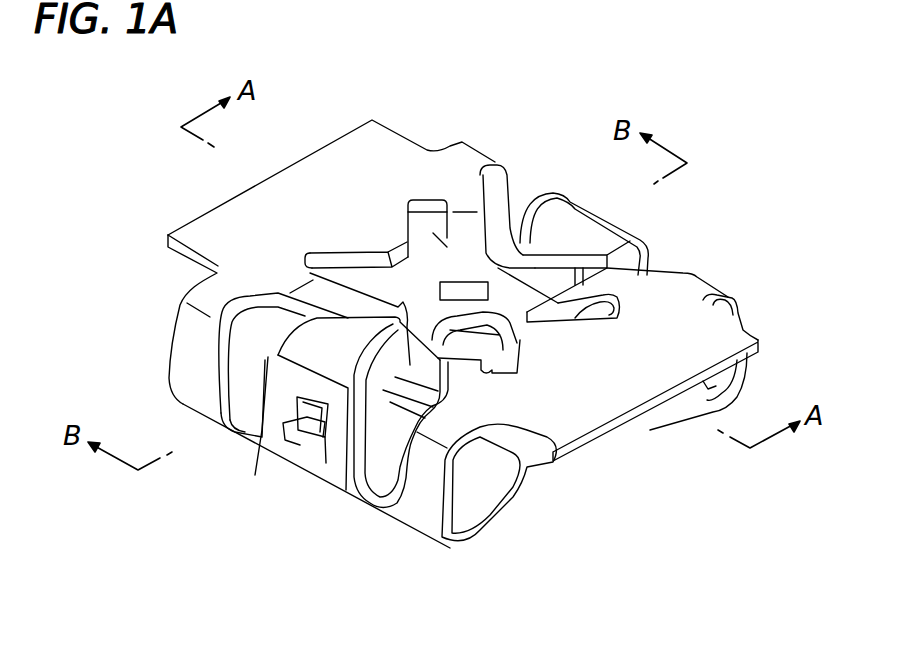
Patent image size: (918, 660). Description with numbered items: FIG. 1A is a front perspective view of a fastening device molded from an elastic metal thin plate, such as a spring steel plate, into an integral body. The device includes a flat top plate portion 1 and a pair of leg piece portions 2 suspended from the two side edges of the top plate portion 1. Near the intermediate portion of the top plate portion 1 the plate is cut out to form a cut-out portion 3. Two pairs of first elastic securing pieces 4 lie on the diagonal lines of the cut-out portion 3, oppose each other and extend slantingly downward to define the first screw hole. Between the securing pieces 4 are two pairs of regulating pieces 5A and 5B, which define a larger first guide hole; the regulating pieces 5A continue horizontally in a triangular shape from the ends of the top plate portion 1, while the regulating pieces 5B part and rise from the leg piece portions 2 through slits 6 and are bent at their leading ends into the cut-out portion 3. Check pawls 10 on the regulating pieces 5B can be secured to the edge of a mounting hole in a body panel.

The top plate portion 1 is at (222, 225).
The leg piece portion 2 is at (306, 494).
The cut-out portion 3 is at (422, 285).
The first elastic securing piece 4 is at (360, 307).
The first regulating piece 5A is at (394, 244).
The first regulating piece 5B is at (532, 244).
The slit 6 is at (242, 362).
The check pawl 10 is at (280, 450).